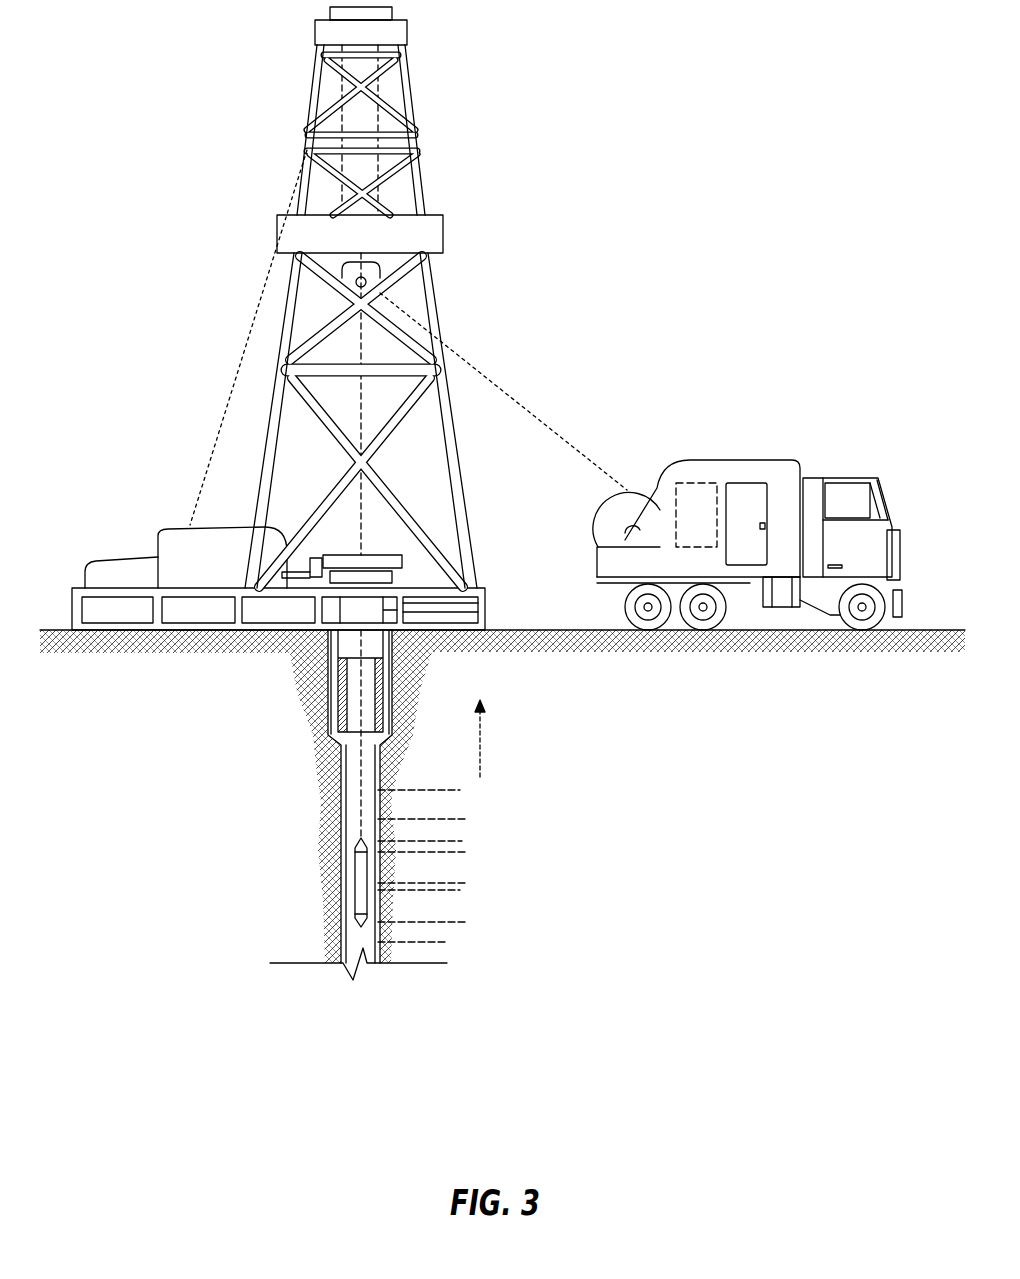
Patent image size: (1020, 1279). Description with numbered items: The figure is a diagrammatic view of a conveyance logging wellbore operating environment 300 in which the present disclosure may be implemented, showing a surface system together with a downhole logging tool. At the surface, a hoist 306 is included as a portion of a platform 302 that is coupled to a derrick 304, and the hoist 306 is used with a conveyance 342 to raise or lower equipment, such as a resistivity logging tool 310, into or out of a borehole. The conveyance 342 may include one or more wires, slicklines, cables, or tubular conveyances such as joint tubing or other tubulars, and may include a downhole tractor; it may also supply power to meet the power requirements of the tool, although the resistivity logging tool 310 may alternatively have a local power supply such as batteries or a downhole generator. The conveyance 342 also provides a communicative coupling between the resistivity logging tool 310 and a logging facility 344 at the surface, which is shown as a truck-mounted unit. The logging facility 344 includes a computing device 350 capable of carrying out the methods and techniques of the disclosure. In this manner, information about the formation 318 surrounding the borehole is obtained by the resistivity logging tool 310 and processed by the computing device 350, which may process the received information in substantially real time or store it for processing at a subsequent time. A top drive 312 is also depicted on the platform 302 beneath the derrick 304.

The conveyance logging wellbore operating environment 300 is at (156, 66).
The platform 302 is at (485, 610).
The derrick 304 is at (477, 551).
The hoist 306 is at (378, 273).
The resistivity logging tool 310 is at (355, 885).
The top drive 312 is at (383, 552).
The formation 318 is at (473, 790).
The conveyance 342 is at (507, 393).
The logging facility 344 is at (762, 483).
The computing device 350 is at (692, 483).